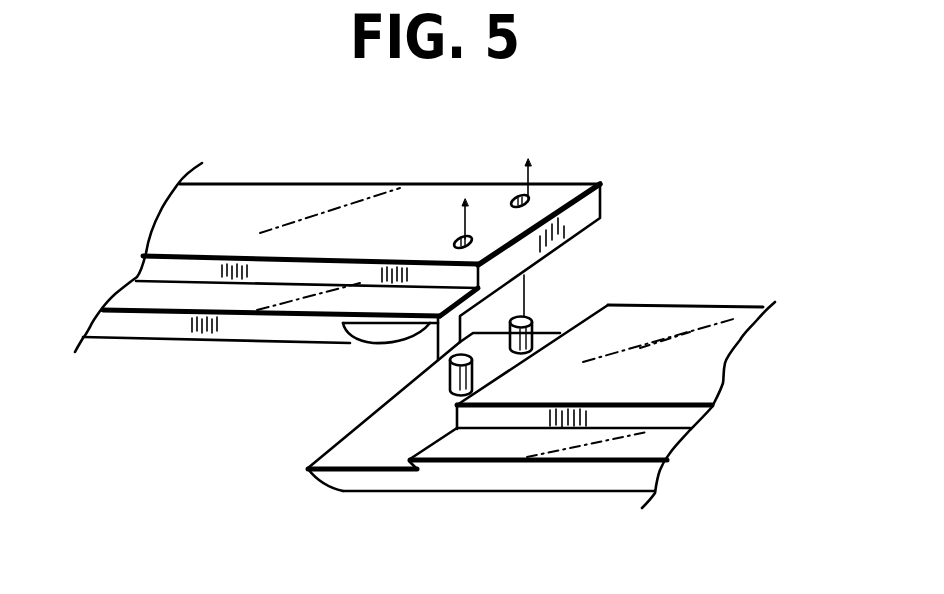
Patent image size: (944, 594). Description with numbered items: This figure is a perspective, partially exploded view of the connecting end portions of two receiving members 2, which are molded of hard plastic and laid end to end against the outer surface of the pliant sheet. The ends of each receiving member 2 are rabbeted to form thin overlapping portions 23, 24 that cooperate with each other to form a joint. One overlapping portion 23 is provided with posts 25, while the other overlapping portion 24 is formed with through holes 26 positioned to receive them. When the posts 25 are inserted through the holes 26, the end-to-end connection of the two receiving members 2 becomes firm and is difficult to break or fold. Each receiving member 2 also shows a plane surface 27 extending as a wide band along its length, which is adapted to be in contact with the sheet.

The receiving member 2 is at (343, 187).
The overlapping portion 23 is at (373, 437).
The overlapping portion 24 is at (440, 324).
The post 25 is at (532, 331).
The hole 26 is at (455, 242).
The plane surface 27 is at (268, 187).